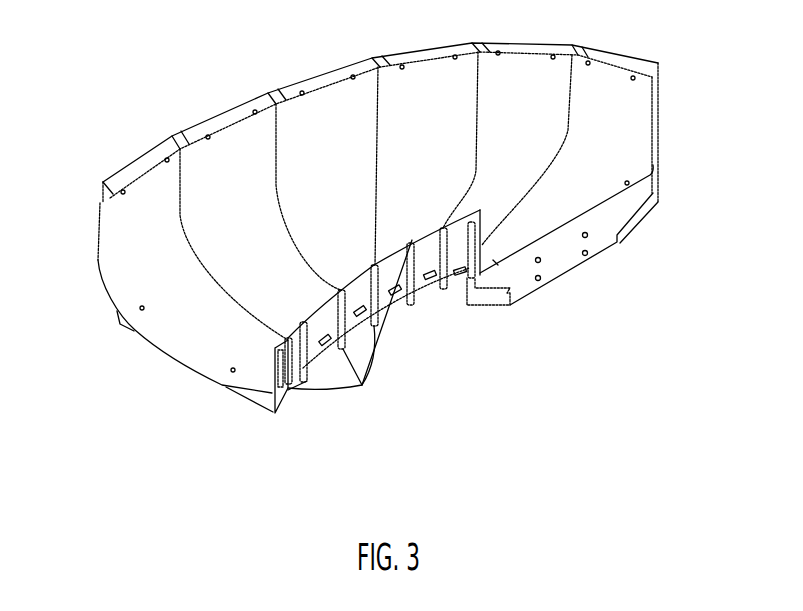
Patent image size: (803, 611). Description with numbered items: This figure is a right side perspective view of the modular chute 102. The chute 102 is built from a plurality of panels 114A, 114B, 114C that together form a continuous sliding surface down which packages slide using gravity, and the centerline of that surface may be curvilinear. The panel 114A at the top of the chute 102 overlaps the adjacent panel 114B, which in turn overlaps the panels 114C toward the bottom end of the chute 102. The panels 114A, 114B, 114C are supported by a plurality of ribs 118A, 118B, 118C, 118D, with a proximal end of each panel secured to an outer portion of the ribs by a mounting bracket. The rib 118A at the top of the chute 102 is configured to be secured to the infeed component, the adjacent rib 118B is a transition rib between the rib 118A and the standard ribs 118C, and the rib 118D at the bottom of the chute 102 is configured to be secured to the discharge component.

The modular chute 102 is at (158, 70).
The panel 114A is at (624, 146).
The panel 114B is at (534, 133).
The panel 114C is at (161, 258).
The rib 118A is at (602, 237).
The rib 118B is at (440, 293).
The rib 118C is at (350, 331).
The rib 118D is at (273, 414).